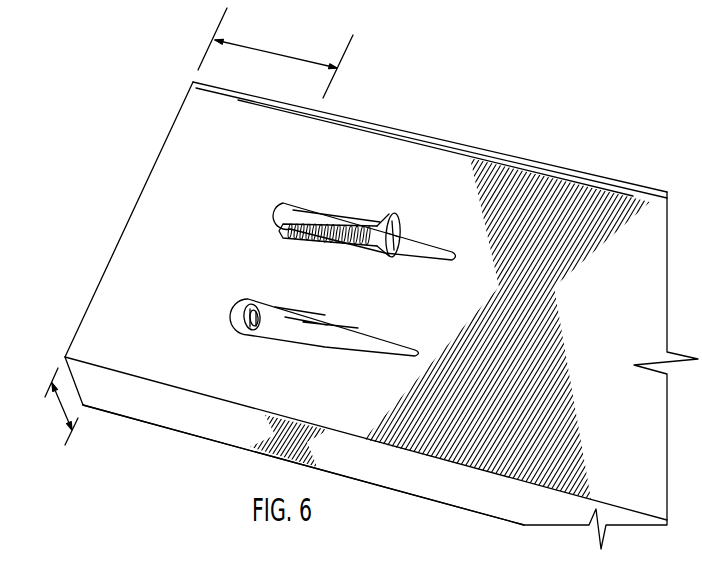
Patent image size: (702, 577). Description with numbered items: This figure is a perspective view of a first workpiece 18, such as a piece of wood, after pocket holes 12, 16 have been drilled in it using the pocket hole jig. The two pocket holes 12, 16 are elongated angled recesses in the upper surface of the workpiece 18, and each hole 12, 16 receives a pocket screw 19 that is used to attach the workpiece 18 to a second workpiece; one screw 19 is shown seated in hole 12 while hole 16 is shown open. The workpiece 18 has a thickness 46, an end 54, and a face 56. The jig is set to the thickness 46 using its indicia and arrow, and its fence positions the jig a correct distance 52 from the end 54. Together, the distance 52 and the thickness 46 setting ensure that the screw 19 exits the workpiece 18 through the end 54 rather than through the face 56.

The pocket hole 12 is at (311, 215).
The pocket hole 16 is at (300, 326).
The workpiece 18 is at (455, 158).
The pocket screw 19 is at (402, 223).
The thickness 46 is at (60, 410).
The distance 52 is at (277, 54).
The end 54 is at (152, 167).
The face 56 is at (207, 440).